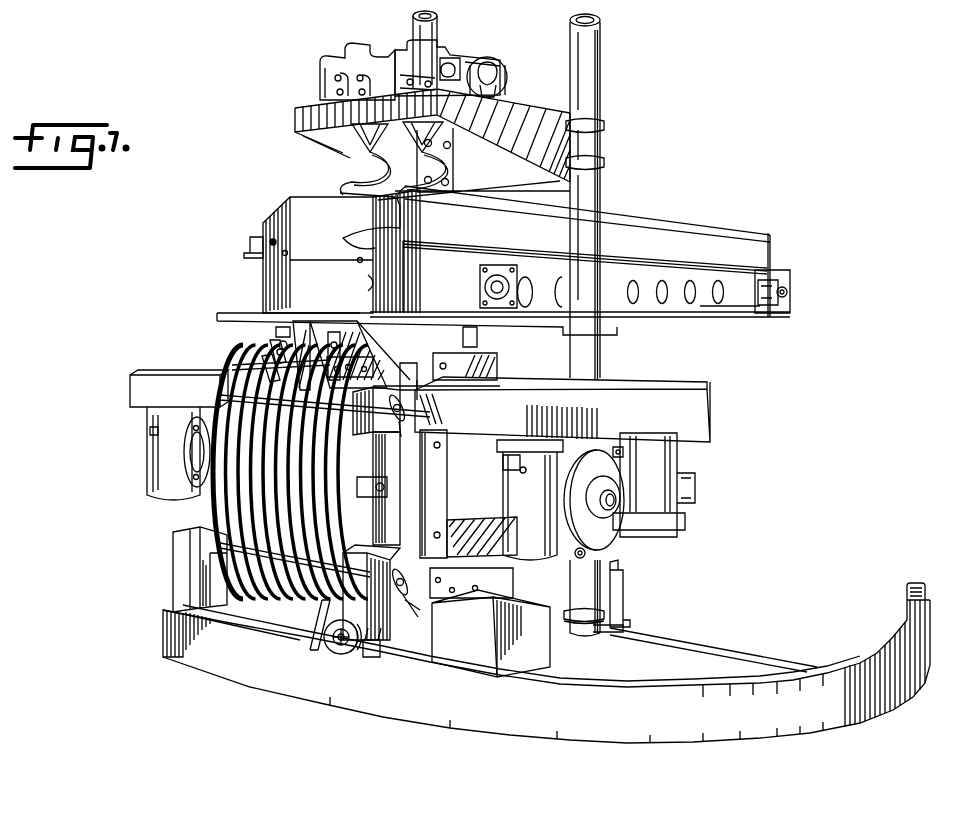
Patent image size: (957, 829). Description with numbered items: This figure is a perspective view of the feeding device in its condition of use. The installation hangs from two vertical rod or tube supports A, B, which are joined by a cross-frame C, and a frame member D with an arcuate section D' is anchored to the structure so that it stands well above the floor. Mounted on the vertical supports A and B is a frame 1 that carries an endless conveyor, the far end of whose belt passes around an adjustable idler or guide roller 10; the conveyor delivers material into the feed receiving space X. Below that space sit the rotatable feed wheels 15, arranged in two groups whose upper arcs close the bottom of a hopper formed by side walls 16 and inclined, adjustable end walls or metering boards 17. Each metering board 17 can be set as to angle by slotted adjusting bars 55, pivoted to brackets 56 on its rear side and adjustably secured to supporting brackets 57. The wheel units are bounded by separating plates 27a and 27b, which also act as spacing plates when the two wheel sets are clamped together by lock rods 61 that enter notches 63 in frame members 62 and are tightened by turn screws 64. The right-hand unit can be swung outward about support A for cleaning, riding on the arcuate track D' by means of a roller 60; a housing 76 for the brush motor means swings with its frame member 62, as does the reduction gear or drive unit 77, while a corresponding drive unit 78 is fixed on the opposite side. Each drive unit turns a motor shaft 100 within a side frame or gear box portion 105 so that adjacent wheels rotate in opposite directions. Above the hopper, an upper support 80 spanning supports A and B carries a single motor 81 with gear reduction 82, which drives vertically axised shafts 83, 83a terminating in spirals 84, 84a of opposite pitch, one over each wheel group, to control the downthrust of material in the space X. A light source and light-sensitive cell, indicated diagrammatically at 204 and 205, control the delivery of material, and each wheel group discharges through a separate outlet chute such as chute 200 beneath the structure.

The vertical support A is at (597, 47).
The vertical support B is at (422, 26).
The cross-frame C is at (624, 597).
The frame member D is at (546, 664).
The arcuate section D' is at (566, 752).
The feed receiving space X is at (303, 291).
The frame 1 is at (700, 306).
The adjustable idler or guide roller 10 is at (790, 296).
The feed receiving wheels 15 is at (218, 511).
The hopper side walls 16 is at (222, 313).
The hopper end walls 17 is at (308, 325).
The separating plate 27a is at (307, 628).
The separating plate 27b is at (307, 610).
The slotted adjusting bars 55 is at (268, 340).
The brackets 56 is at (282, 328).
The supporting brackets 57 is at (245, 360).
The roller 60 is at (358, 655).
The lock rods 61 is at (218, 390).
The frame members 62 is at (404, 410).
The notches 63 is at (380, 556).
The turn screws 64 is at (395, 433).
The housing 76 is at (537, 653).
The reduction gear or drive unit 77 is at (610, 548).
The gear or drive unit 78 is at (146, 466).
The upper support 80 is at (517, 113).
The motor 81 is at (490, 68).
The gear reduction 82 is at (378, 55).
The vertically axised shaft 83 is at (352, 125).
The vertically axised shaft 83a is at (440, 122).
The spiral 84 is at (360, 186).
The spiral 84a is at (402, 194).
The motor shaft 100 is at (615, 498).
The side frame or gear box portion 105 is at (467, 460).
The outlet chute 200 is at (373, 657).
The light-responsive control means 204 is at (402, 233).
The light-responsive control means 205 is at (258, 240).